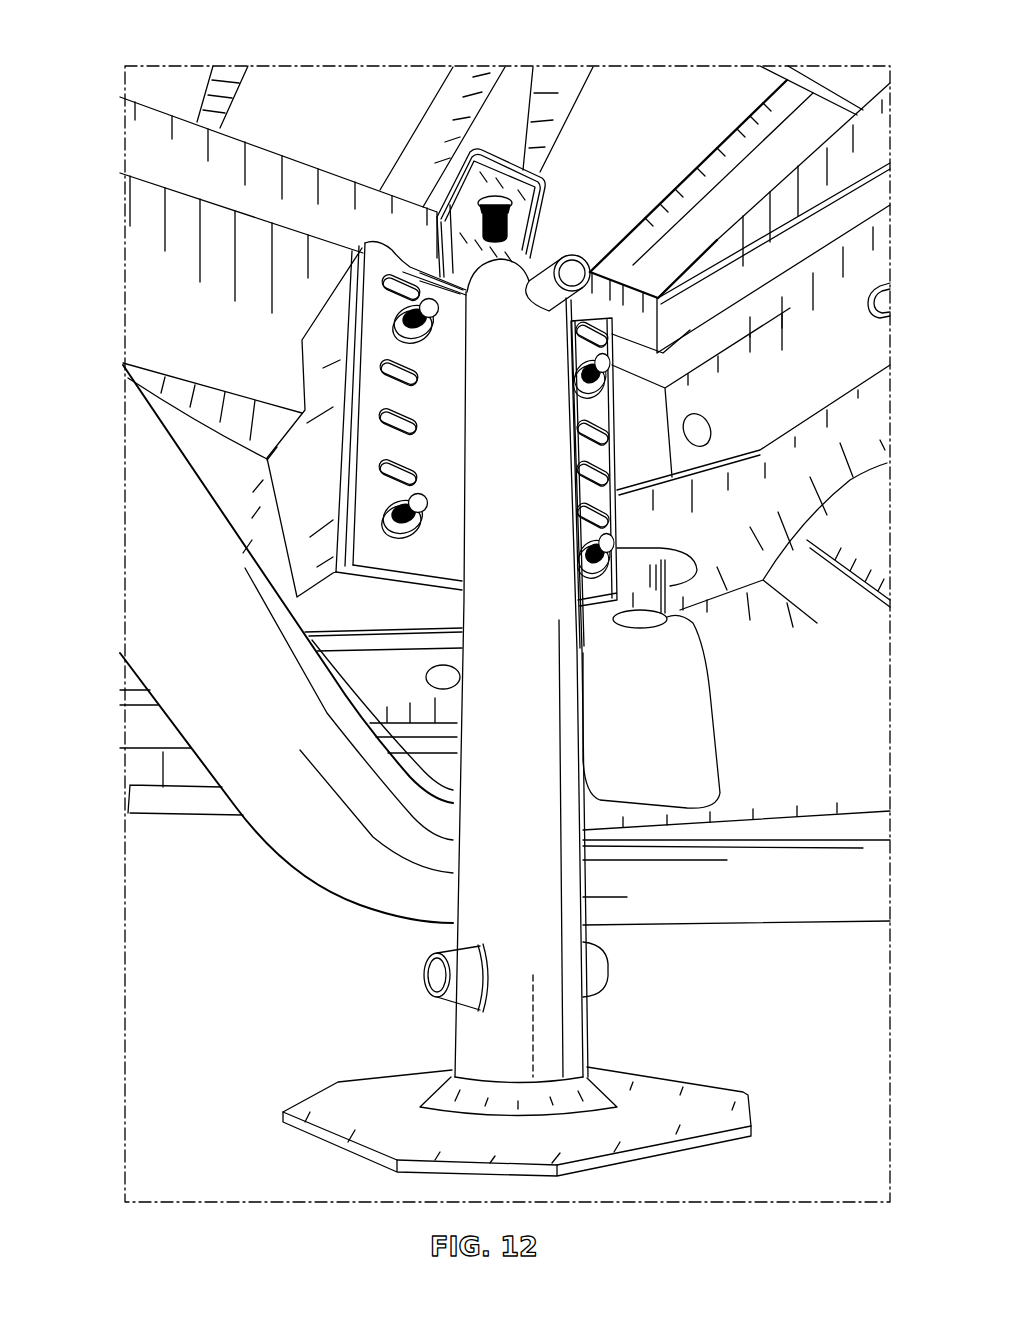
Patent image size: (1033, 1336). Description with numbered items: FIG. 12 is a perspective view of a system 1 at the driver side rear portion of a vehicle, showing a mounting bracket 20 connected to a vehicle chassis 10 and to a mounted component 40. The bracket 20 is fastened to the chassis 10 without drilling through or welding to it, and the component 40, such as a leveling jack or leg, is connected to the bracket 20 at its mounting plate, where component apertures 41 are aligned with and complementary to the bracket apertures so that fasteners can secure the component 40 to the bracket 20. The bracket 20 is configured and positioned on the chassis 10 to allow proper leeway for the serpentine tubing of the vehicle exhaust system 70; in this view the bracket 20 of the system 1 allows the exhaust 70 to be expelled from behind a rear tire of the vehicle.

The system 1 is at (692, 35).
The vehicle chassis 10 is at (184, 300).
The mounting bracket 20 is at (295, 476).
The component 40 is at (533, 638).
The component apertures 41 is at (397, 474).
The vehicle exhaust system 70 is at (767, 905).